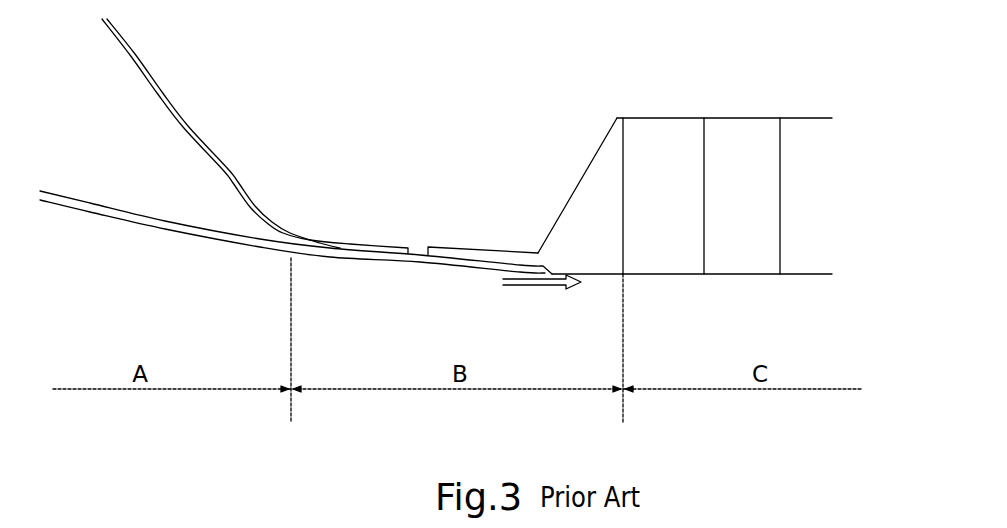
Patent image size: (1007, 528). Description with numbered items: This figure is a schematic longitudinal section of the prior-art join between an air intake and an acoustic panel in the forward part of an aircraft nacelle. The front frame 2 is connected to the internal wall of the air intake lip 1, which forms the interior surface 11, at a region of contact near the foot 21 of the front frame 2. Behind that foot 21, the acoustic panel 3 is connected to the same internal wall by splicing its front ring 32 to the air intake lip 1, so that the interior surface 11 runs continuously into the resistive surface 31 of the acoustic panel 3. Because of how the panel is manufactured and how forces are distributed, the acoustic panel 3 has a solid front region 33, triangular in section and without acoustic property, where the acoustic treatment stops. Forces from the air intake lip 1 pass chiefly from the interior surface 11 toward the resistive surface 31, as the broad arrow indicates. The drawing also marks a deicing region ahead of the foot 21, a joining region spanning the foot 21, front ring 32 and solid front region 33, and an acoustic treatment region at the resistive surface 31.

The air intake lip 1 is at (83, 207).
The interior surface 11 is at (150, 227).
The front frame 2 is at (183, 127).
The foot 21 is at (356, 245).
The acoustic panel 3 is at (745, 132).
The resistive surface 31 is at (733, 277).
The front ring 32 is at (449, 253).
The solid front region 33 is at (594, 190).